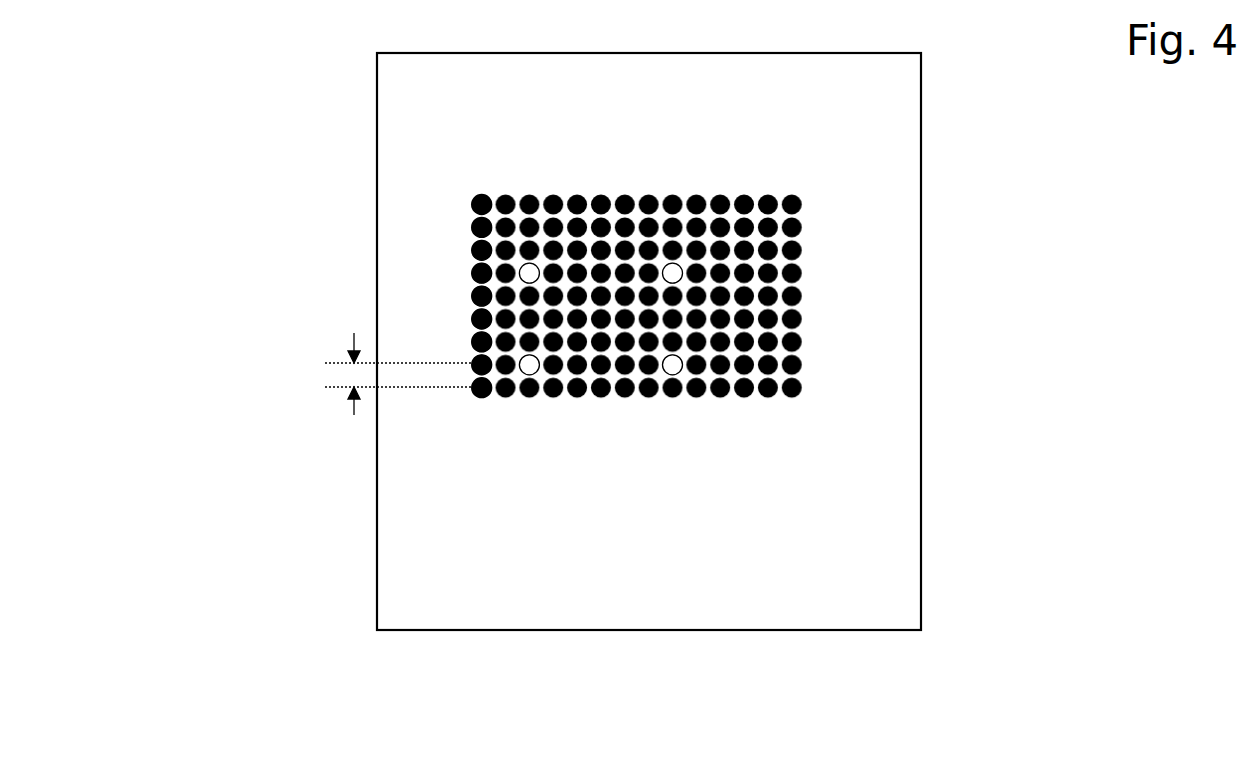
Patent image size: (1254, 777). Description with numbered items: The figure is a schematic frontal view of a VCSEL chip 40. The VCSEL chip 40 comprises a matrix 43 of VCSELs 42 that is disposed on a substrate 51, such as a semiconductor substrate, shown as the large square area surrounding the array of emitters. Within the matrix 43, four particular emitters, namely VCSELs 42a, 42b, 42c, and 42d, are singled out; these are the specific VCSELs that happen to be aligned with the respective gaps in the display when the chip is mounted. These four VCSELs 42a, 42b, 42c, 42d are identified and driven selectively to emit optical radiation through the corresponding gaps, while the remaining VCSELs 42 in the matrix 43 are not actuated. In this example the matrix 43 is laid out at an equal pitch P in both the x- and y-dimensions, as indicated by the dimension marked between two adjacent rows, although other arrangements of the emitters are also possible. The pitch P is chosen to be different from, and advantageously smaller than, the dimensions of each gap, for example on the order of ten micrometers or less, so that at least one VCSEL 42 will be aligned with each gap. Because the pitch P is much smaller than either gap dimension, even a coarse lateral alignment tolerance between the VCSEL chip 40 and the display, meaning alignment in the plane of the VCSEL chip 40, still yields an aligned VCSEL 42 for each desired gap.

The VCSEL chip 40 is at (641, 318).
The VCSELs 42 is at (473, 205).
The VCSEL 42a is at (538, 270).
The VCSEL 42b is at (678, 270).
The VCSEL 42c is at (537, 362).
The VCSEL 42d is at (680, 362).
The matrix 43 is at (684, 211).
The substrate 51 is at (664, 548).
The pitch P is at (396, 374).